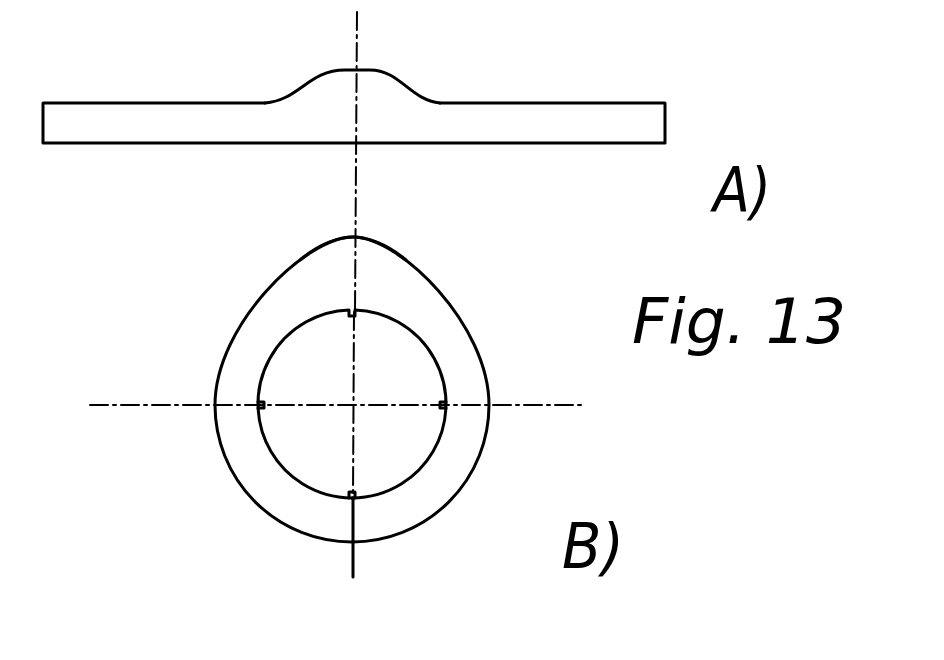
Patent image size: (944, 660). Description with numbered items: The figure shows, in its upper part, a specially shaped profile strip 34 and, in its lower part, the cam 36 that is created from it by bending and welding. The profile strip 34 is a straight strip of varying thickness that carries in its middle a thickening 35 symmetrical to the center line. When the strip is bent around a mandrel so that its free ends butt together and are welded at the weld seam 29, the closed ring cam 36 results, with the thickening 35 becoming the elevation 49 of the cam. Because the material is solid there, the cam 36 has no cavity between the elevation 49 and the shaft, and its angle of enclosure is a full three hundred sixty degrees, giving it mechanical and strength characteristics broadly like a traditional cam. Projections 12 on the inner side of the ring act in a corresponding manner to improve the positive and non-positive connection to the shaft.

The projections 12 is at (263, 413).
The weld seam 29 is at (348, 517).
The profile strip 34 is at (580, 115).
The thickening 35 is at (342, 85).
The cam 36 is at (253, 323).
The elevation 49 is at (363, 245).